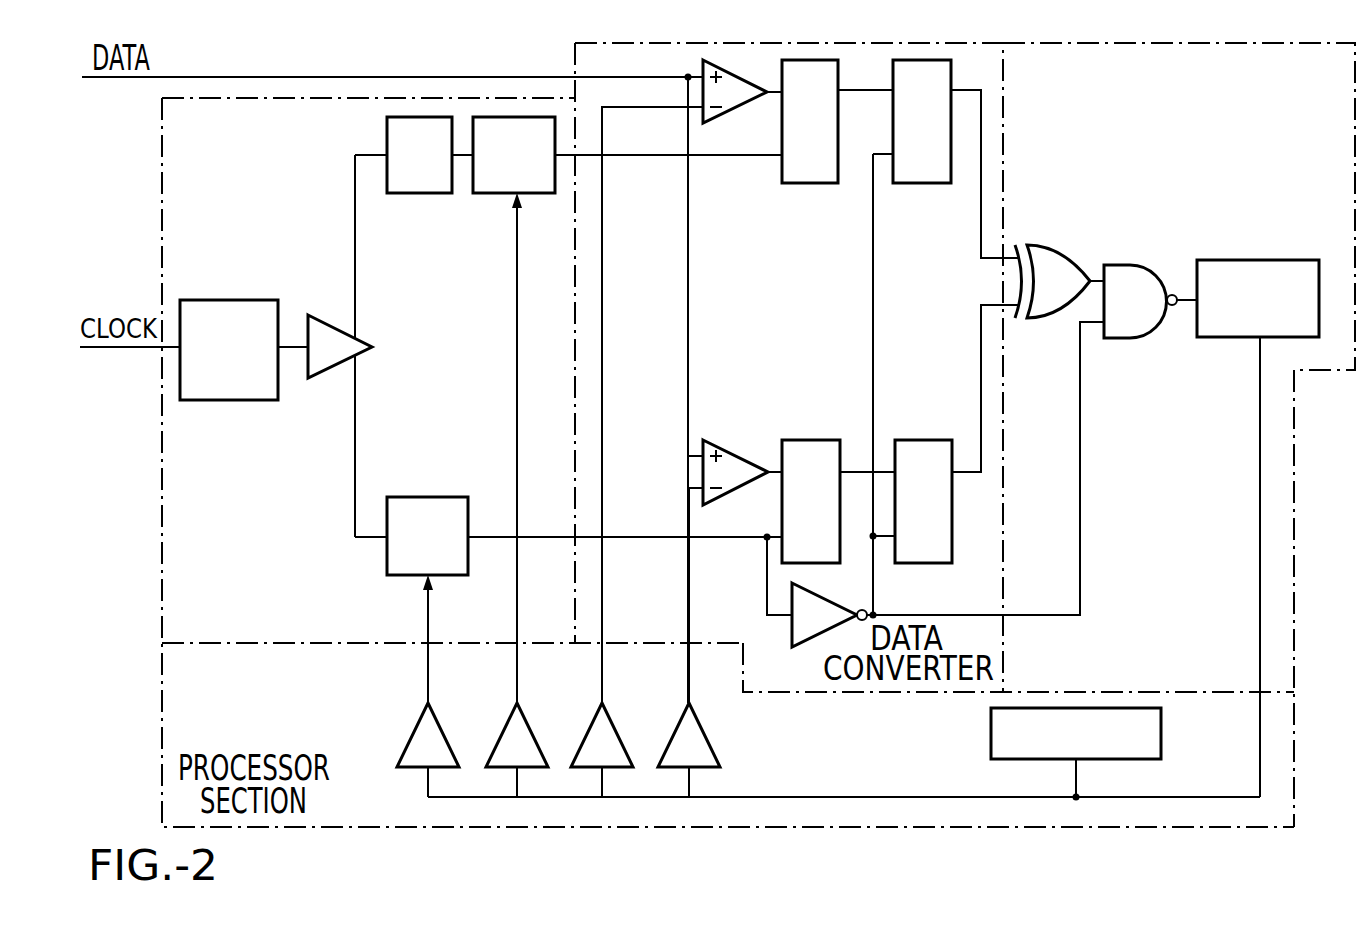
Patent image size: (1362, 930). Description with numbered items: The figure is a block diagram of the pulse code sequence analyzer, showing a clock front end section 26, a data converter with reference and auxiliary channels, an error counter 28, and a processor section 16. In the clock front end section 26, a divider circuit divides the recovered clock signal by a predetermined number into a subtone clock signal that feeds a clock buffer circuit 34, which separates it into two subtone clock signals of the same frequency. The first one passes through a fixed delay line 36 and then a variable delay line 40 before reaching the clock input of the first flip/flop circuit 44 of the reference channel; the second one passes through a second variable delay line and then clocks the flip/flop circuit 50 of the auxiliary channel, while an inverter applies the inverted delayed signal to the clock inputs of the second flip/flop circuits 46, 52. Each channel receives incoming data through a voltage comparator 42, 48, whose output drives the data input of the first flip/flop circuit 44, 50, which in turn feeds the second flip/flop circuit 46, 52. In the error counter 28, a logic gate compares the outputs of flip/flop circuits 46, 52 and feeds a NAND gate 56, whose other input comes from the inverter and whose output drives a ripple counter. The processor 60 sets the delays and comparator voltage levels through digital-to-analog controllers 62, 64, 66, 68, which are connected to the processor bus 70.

The processor section 16 is at (345, 830).
The clock front end section 26 is at (162, 503).
The error counter 28 is at (1137, 42).
The clock buffer circuit 34 is at (308, 375).
The fixed delay line 36 is at (421, 195).
The variable delay line 40 is at (490, 195).
The voltage comparator 42 is at (733, 108).
The first flip/flop circuit 44 is at (815, 185).
The second flip/flop circuit 46 is at (931, 185).
The voltage comparator 48 is at (733, 455).
The flip/flop circuit 50 is at (813, 438).
The second flip/flop circuit 52 is at (930, 438).
The NAND gate 56 is at (1136, 265).
The processor 60 is at (991, 735).
The digital-to-analog controller 62 is at (413, 733).
The digital-to-analog controller 64 is at (501, 733).
The digital-to-analog converter 66 is at (588, 733).
The digital-to-analog converter 68 is at (676, 733).
The processor bus 70 is at (835, 795).